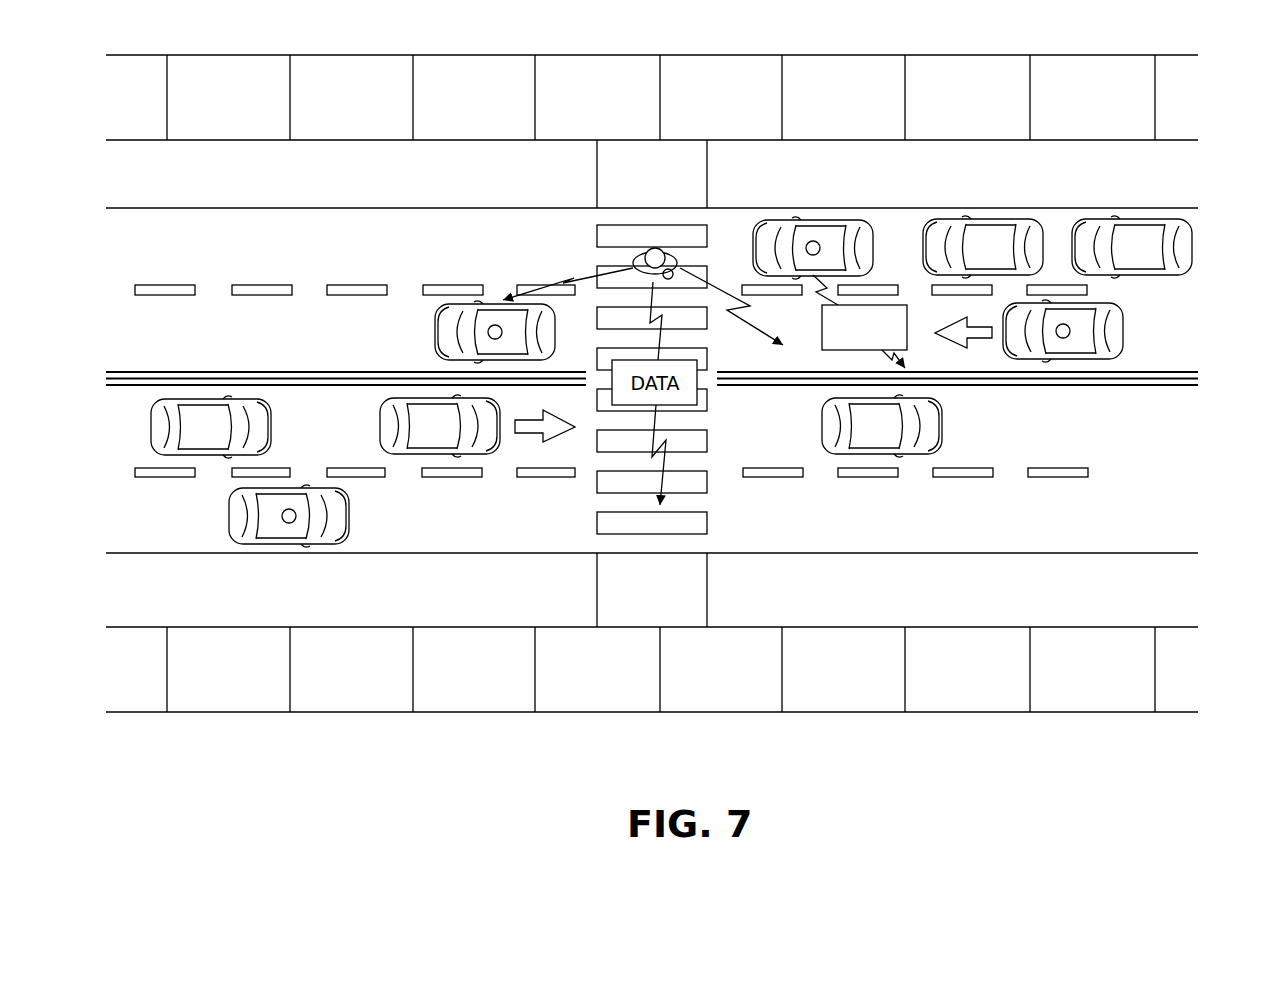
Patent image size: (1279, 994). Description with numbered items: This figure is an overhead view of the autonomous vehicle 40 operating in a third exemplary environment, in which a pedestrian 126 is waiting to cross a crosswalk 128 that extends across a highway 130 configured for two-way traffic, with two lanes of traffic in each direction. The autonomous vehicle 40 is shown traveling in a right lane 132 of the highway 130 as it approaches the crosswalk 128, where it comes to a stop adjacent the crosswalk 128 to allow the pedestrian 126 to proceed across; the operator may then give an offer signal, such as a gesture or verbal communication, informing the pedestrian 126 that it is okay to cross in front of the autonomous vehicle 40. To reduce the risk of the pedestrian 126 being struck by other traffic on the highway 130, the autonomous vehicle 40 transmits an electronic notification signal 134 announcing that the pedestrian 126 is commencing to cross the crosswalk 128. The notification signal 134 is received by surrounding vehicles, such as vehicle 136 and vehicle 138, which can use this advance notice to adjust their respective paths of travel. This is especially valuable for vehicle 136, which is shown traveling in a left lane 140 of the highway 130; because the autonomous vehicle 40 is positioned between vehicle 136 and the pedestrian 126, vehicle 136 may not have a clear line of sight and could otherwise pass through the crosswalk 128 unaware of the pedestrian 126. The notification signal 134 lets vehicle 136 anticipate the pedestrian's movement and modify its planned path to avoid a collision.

The autonomous vehicle 40 is at (812, 222).
The pedestrian 126 is at (650, 247).
The crosswalk 128 is at (708, 525).
The highway 130 is at (1210, 727).
The right lane 132 is at (265, 256).
The electronic notification signal 134 is at (822, 300).
The vehicle 136 is at (1080, 361).
The vehicle 138 is at (352, 531).
The left lane 140 is at (289, 341).